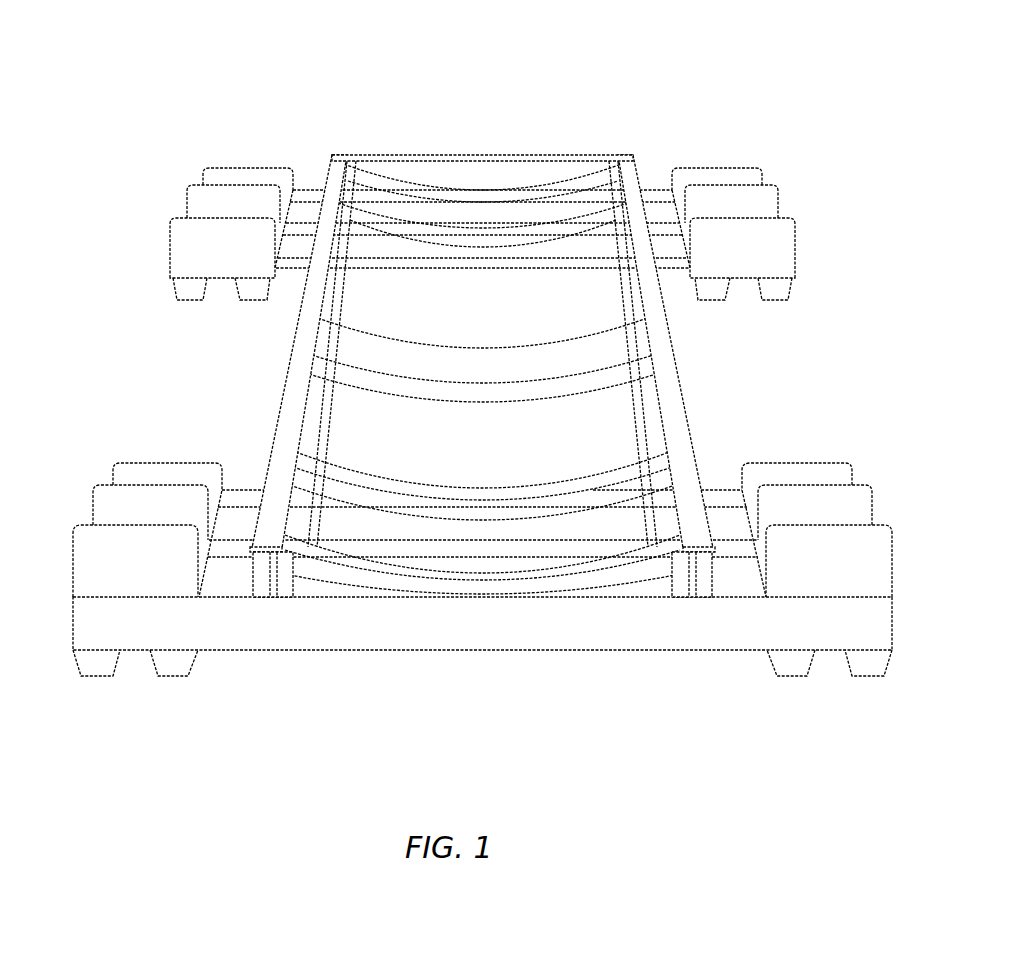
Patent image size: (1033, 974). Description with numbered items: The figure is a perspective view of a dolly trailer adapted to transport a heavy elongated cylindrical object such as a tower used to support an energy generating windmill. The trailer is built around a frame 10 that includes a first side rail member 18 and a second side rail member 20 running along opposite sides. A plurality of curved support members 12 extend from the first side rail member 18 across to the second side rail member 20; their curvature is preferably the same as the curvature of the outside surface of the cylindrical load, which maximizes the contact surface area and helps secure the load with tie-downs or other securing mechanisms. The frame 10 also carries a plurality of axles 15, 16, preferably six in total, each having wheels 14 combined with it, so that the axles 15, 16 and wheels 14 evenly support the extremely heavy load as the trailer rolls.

The frame 10 is at (557, 162).
The curved support members 12 is at (640, 230).
The wheels 14 is at (776, 290).
The axle 15 is at (384, 257).
The axle 16 is at (530, 550).
The first side rail member 18 is at (328, 253).
The second side rail member 20 is at (597, 213).